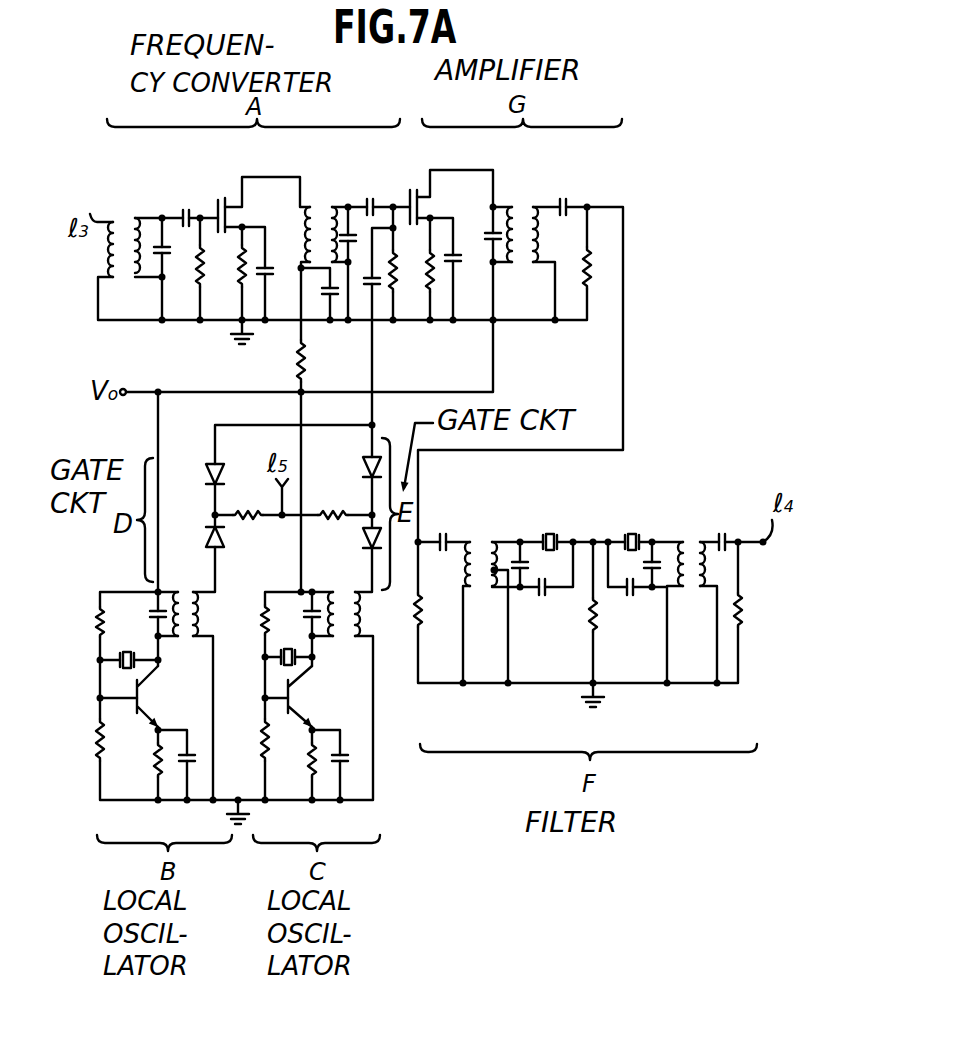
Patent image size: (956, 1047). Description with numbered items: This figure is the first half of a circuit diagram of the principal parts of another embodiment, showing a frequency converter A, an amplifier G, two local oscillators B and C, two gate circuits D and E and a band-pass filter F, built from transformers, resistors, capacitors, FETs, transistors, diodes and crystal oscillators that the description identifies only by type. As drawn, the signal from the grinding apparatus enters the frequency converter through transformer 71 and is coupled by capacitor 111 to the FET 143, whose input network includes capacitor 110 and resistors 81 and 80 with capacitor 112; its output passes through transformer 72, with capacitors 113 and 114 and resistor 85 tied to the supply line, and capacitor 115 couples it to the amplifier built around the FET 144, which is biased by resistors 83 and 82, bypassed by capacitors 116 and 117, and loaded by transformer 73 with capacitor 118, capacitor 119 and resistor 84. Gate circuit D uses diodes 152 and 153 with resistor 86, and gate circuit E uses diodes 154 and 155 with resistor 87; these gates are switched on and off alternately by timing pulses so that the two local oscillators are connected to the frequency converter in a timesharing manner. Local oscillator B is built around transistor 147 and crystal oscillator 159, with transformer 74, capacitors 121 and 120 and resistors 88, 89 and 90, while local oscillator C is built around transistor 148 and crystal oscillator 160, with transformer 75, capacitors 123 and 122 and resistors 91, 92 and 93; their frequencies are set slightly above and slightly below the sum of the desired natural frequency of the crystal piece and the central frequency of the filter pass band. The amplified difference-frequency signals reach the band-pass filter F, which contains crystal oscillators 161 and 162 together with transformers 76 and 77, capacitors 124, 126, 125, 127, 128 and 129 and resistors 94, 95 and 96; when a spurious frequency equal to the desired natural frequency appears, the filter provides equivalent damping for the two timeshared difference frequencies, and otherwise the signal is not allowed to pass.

The transformer 71 is at (122, 214).
The capacitor 111 is at (186, 212).
The FET 143 is at (222, 198).
The transformer 72 is at (318, 208).
The capacitor 114 is at (352, 230).
The capacitor 115 is at (373, 204).
The FET 144 is at (418, 193).
The capacitor 118 is at (490, 233).
The transformer 73 is at (514, 210).
The capacitor 119 is at (566, 205).
The capacitor 110 is at (168, 258).
The resistor 81 is at (203, 278).
The resistor 80 is at (240, 276).
The capacitor 112 is at (268, 275).
The capacitor 113 is at (332, 300).
The resistor 85 is at (306, 362).
The capacitor 116 is at (374, 290).
The resistor 83 is at (398, 265).
The resistor 82 is at (428, 272).
The capacitor 117 is at (456, 270).
The resistor 84 is at (590, 292).
The diode 152 is at (208, 472).
The diode 153 is at (208, 540).
The resistor 86 is at (248, 520).
The resistor 87 is at (334, 520).
The diode 154 is at (363, 467).
The diode 155 is at (365, 548).
The capacitor 121 is at (155, 614).
The resistor 88 is at (100, 635).
The transformer 74 is at (183, 637).
The crystal oscillator 159 is at (125, 668).
The resistor 89 is at (98, 735).
The transistor 147 is at (136, 706).
The resistor 90 is at (155, 760).
The capacitor 120 is at (187, 752).
The capacitor 123 is at (306, 612).
The resistor 91 is at (263, 628).
The crystal oscillator 160 is at (285, 665).
The transformer 75 is at (341, 638).
The transistor 148 is at (296, 700).
The resistor 92 is at (263, 732).
The resistor 93 is at (310, 758).
The capacitor 122 is at (348, 758).
The capacitor 124 is at (444, 538).
The resistor 94 is at (422, 618).
The transformer 76 is at (475, 590).
The capacitor 126 is at (520, 555).
The capacitor 125 is at (544, 594).
The crystal oscillator 161 is at (553, 538).
The resistor 95 is at (598, 610).
The crystal oscillator 162 is at (632, 538).
The capacitor 127 is at (630, 595).
The capacitor 128 is at (656, 560).
The transformer 77 is at (685, 590).
The capacitor 129 is at (735, 526).
The resistor 96 is at (742, 605).